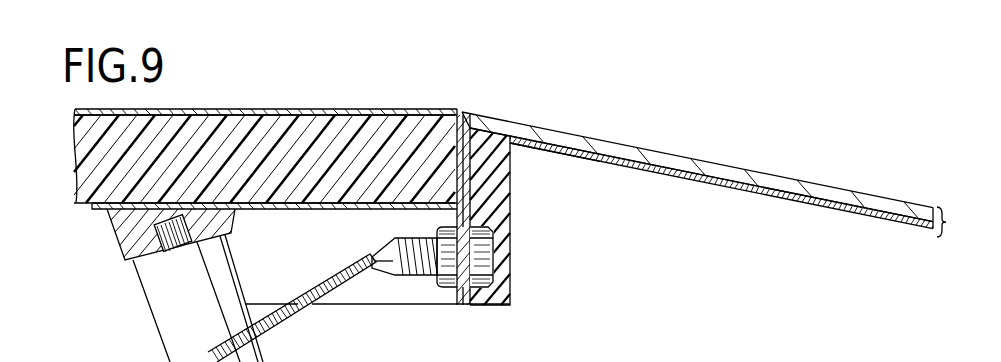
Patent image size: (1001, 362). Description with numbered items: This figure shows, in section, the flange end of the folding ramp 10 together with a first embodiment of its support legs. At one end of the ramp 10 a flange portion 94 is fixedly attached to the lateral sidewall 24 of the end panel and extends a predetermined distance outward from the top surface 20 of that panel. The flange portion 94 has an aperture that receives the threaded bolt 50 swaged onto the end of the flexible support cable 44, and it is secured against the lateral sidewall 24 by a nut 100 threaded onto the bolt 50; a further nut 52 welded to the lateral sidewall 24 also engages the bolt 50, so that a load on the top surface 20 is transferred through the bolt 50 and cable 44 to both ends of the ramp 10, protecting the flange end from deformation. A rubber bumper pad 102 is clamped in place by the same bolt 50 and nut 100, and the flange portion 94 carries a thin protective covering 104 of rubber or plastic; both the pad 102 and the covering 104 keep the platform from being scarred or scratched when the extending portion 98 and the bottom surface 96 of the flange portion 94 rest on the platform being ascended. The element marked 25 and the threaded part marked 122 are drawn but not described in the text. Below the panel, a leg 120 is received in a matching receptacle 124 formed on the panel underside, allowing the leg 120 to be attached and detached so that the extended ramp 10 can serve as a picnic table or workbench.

The ramp 10 is at (440, 95).
The top surface 20 is at (352, 110).
The lateral sidewall 24 is at (457, 307).
The plate lower surface 25 is at (692, 177).
The flexible support cable 44 is at (283, 318).
The threaded bolt 50 is at (403, 266).
The nut 52 is at (440, 287).
The flange portion 94 is at (662, 152).
The bottom surface 96 is at (810, 205).
The extending portion 98 is at (957, 222).
The nut 100 is at (508, 238).
The rubber bumper pad 102 is at (490, 188).
The thin protective covering 104 is at (748, 188).
The leg 120 is at (157, 325).
The threaded stud 122 is at (186, 219).
The receptacle 124 is at (118, 240).